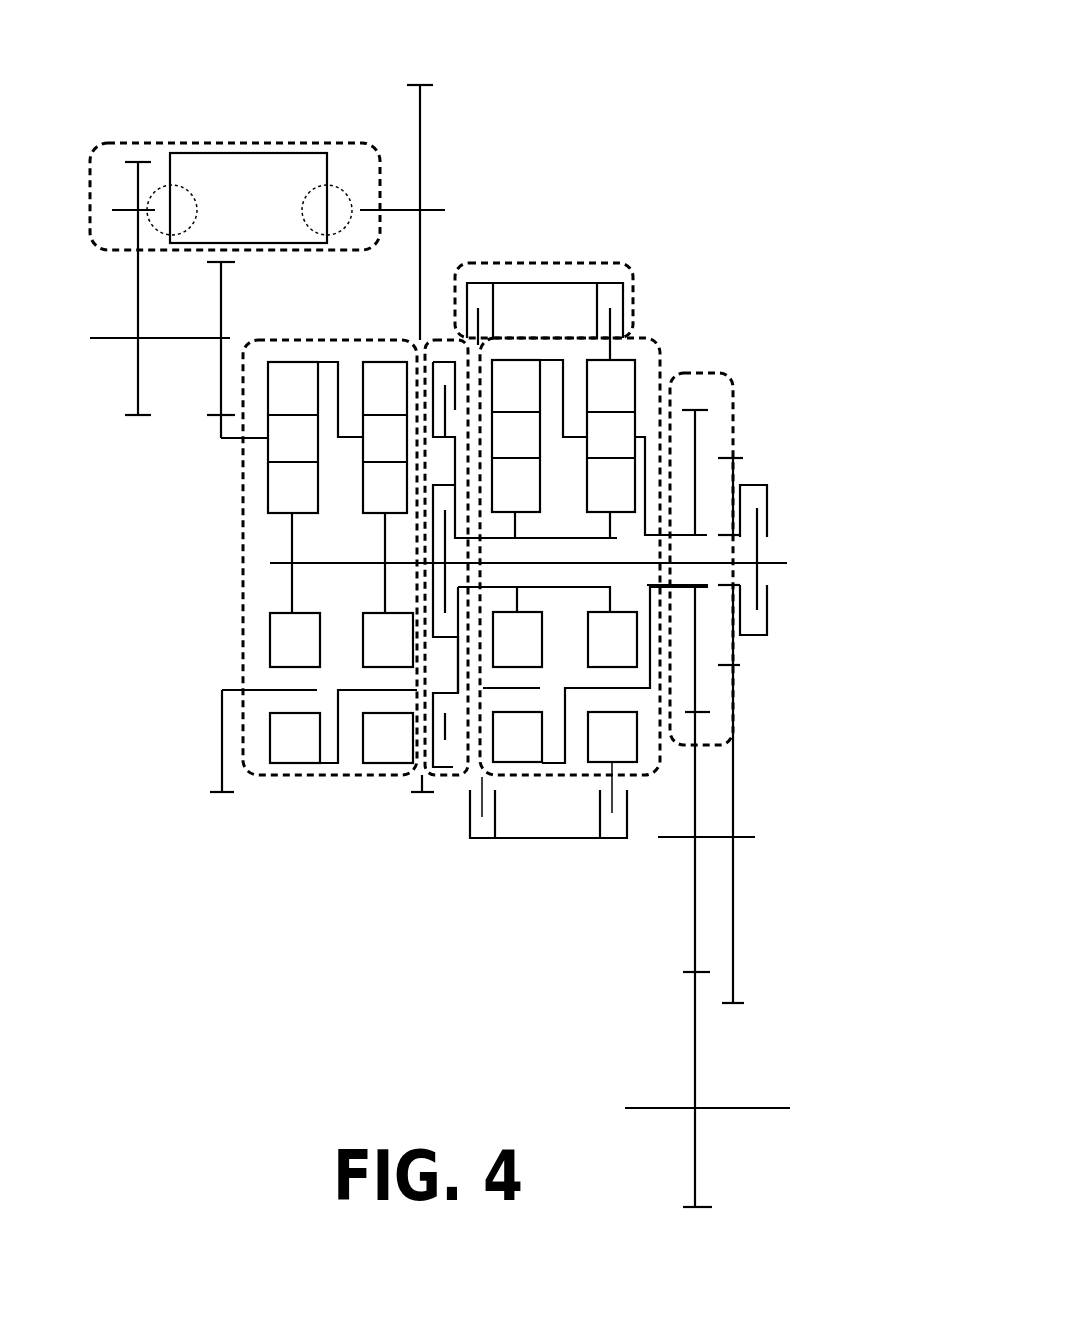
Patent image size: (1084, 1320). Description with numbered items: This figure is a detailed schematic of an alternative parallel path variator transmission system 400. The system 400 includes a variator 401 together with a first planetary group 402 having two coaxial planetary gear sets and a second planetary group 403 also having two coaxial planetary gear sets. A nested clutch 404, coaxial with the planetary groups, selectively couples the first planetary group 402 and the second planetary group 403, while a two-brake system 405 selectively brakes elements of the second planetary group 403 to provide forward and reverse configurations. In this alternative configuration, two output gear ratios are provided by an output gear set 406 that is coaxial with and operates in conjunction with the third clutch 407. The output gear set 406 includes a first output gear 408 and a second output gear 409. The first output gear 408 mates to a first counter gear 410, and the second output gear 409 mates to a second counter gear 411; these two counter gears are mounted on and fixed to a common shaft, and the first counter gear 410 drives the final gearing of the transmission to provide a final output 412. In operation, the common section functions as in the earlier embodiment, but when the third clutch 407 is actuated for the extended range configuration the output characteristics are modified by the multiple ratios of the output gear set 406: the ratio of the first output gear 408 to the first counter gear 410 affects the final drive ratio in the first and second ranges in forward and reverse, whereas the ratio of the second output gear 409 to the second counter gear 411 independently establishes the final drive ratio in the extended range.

The parallel path variator transmission system 400 is at (218, 961).
The variator 401 is at (245, 140).
The first planetary group 402 is at (280, 775).
The second planetary group 403 is at (655, 348).
The nested clutch 404 is at (435, 772).
The two-brake system 405 is at (575, 263).
The output gear set 406 is at (723, 370).
The third clutch 407 is at (753, 487).
The first output gear 408 is at (690, 675).
The second output gear 409 is at (733, 648).
The first counter gear 410 is at (692, 877).
The second counter gear 411 is at (733, 877).
The final output 412 is at (735, 1105).